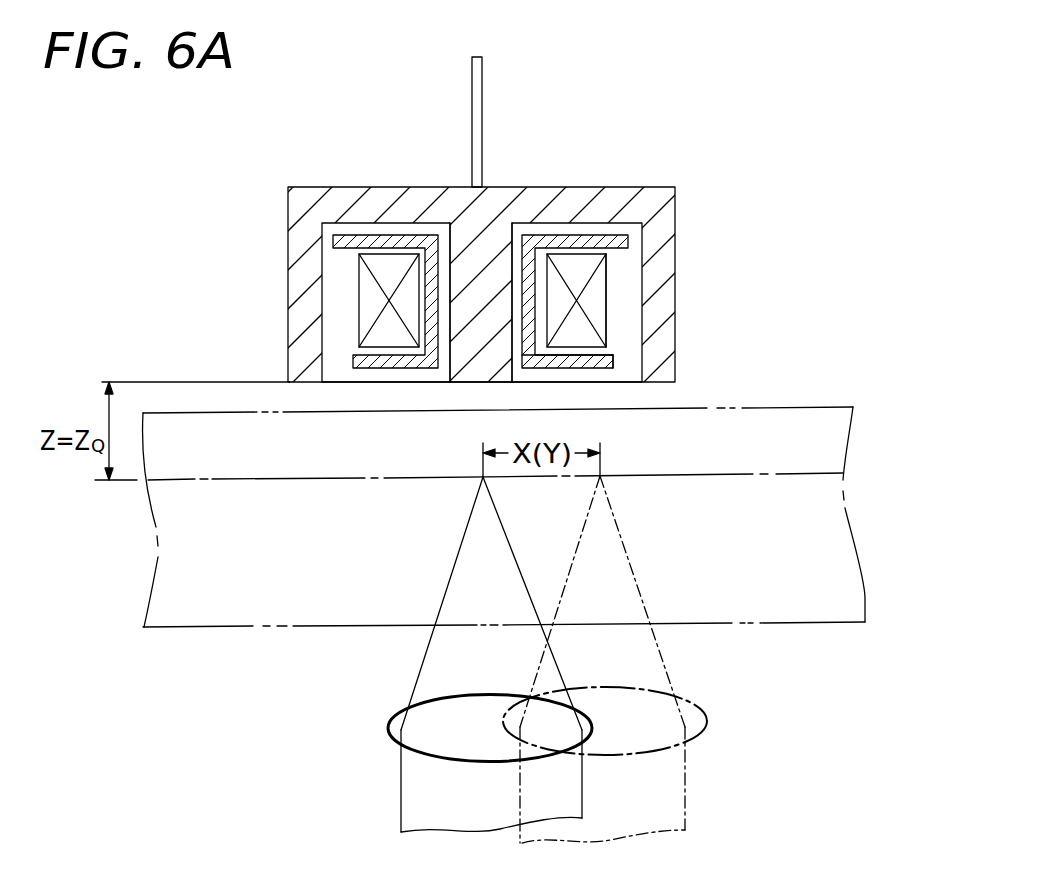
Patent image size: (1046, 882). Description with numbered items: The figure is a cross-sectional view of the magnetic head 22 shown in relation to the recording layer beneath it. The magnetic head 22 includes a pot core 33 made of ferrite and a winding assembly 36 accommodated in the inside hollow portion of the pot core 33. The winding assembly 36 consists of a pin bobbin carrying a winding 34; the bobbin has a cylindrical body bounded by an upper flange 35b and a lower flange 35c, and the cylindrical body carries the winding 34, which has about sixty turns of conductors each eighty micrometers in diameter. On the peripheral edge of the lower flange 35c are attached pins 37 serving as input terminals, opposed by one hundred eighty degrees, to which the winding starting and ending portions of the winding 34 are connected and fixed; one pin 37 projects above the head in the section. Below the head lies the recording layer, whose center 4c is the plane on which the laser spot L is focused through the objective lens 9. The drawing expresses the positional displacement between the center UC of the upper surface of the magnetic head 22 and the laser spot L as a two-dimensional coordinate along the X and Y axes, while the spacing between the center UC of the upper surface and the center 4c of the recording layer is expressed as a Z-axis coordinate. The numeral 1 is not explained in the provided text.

The disk substrate 1 is at (802, 622).
The center of the recording layer 4c is at (799, 473).
The objective lens 9 is at (422, 757).
The magnetic head 22 is at (634, 180).
The pot core 33 is at (450, 297).
The winding 34 is at (592, 307).
The upper flange 35b is at (613, 358).
The lower flange 35c is at (636, 239).
The winding assembly 36 is at (615, 270).
The pin 37 is at (482, 69).
The laser spot L is at (483, 482).
The center of the upper surface of the magnetic head UC is at (487, 383).